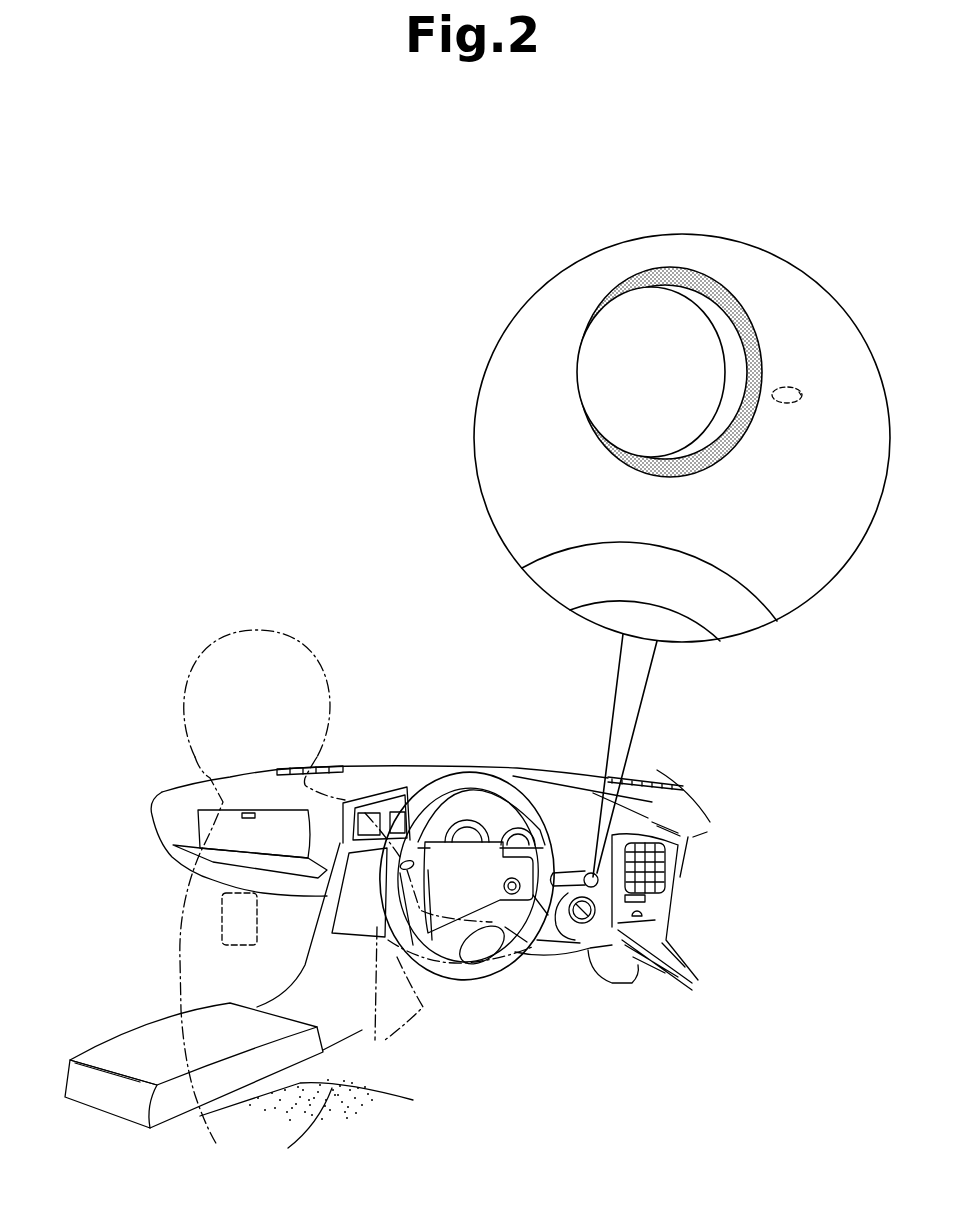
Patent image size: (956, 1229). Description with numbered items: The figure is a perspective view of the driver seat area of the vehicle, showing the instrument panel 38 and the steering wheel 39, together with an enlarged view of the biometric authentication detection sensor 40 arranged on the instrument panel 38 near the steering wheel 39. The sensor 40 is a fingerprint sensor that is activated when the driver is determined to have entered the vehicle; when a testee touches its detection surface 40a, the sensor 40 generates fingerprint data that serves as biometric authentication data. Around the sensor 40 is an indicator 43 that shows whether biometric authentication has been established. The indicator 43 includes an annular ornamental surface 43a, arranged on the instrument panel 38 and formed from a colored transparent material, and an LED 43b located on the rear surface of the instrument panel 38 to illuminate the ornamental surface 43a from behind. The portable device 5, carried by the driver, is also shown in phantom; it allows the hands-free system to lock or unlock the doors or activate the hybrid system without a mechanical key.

The portable device 5 is at (220, 907).
The instrument panel 38 is at (552, 783).
The steering wheel 39 is at (455, 780).
The biometric authentication detection sensor 40 is at (692, 344).
The detection surface 40a is at (602, 407).
The indicator 43 is at (718, 372).
The annular ornamental surface 43a is at (740, 318).
The LED 43b is at (785, 387).